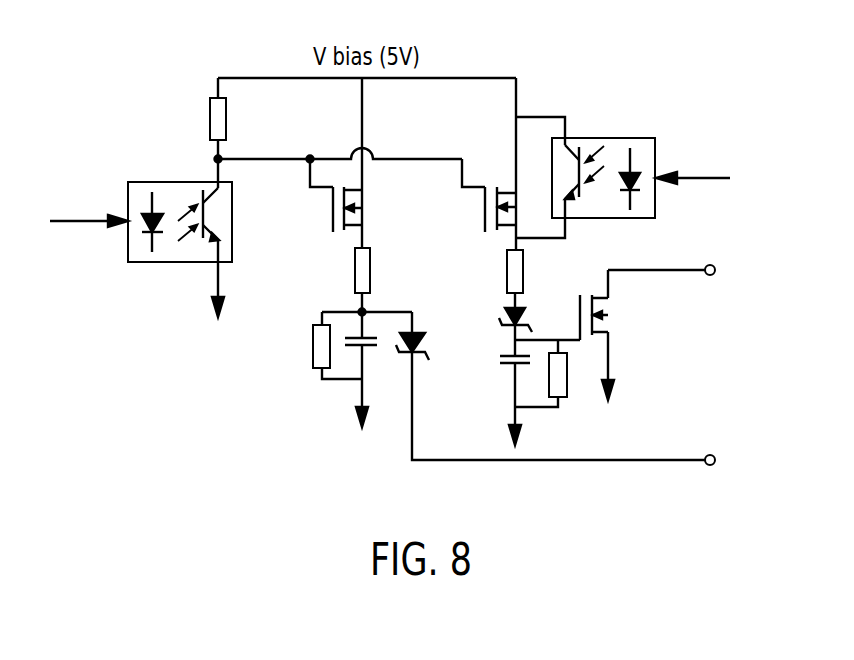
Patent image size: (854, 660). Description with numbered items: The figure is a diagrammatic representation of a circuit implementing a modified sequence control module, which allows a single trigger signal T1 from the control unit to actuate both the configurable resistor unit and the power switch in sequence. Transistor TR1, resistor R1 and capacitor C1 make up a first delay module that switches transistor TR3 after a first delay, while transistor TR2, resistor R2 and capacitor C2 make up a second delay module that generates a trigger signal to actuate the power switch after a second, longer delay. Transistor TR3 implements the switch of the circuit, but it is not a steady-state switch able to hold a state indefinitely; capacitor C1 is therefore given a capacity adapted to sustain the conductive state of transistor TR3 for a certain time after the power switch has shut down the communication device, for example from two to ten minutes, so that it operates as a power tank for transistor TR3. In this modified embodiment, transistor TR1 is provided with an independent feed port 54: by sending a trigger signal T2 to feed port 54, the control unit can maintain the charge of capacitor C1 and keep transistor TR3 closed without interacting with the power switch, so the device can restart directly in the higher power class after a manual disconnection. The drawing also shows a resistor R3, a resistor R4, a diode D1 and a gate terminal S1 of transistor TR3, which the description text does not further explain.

The feed port 54 is at (657, 176).
The trigger signal T1 is at (89, 207).
The trigger signal T2 is at (694, 165).
The transistor TR1 is at (477, 195).
The transistor TR2 is at (324, 195).
The transistor TR3 is at (623, 335).
The resistor R1 is at (500, 271).
The resistor R2 is at (346, 270).
The third resistor R3 is at (556, 373).
The fourth resistor R4 is at (322, 345).
The capacitor C1 is at (499, 394).
The capacitor C2 is at (368, 382).
The zener diode D1 is at (499, 319).
The gate terminal of third transistor S1 is at (566, 317).